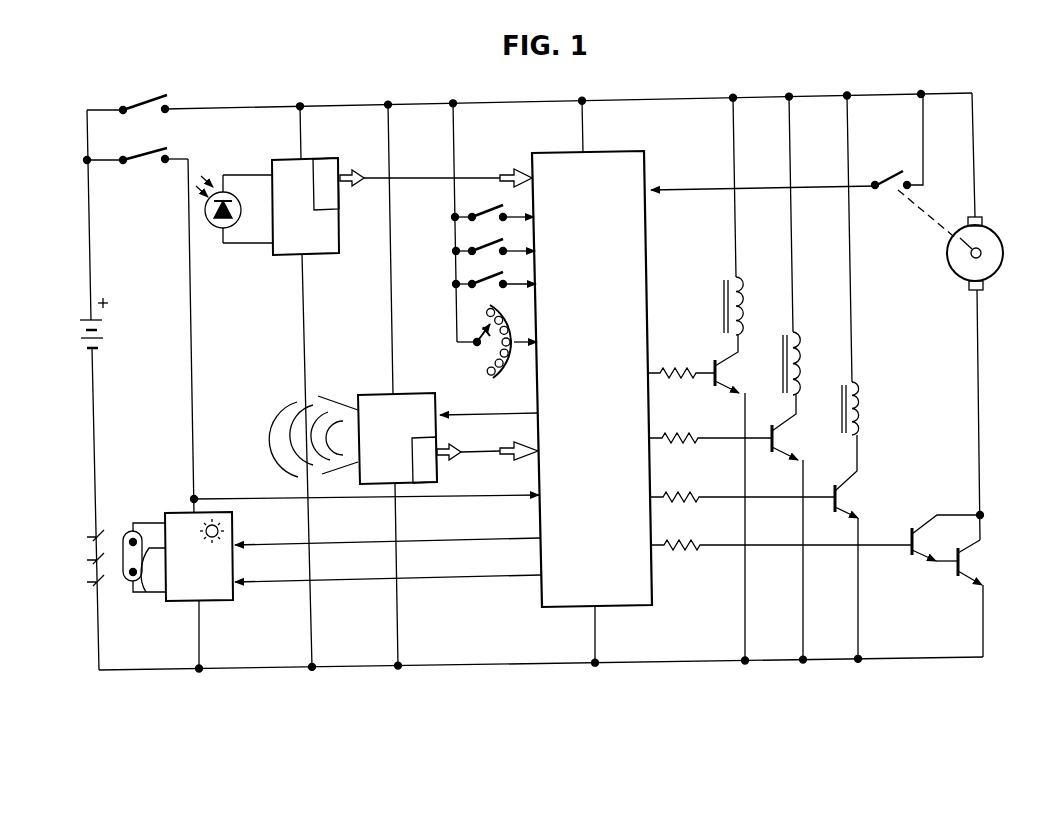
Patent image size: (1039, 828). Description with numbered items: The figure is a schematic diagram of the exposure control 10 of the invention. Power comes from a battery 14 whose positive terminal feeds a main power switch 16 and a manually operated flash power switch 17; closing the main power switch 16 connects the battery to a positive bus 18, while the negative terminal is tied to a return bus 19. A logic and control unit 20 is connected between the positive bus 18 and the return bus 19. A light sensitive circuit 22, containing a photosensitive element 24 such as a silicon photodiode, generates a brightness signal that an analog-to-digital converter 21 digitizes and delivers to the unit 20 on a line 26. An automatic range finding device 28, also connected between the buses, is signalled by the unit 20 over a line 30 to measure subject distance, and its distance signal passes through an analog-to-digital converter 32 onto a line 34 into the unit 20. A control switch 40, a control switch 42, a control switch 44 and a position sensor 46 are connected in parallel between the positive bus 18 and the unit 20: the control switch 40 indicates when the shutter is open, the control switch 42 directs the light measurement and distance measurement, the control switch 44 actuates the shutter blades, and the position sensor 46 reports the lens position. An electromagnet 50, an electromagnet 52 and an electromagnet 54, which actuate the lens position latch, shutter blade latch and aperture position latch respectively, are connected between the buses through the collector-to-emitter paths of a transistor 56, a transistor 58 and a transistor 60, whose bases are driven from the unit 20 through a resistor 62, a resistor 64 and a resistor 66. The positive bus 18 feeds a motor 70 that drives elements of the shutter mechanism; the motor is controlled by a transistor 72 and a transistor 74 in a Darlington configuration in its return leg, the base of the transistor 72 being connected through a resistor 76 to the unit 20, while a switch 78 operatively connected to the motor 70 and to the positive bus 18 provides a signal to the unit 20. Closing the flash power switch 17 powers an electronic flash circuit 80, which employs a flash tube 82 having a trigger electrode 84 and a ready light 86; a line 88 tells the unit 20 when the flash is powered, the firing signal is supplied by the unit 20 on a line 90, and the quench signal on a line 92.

The exposure control 10 is at (889, 46).
The battery 14 is at (108, 329).
The main power switch 16 is at (147, 98).
The flash power switch 17 is at (146, 165).
The positive bus 18 is at (356, 101).
The return bus 19 is at (347, 665).
The logic and control unit 20 is at (620, 151).
The analog-to-digital converter 21 is at (338, 158).
The light sensitive circuit 22 is at (287, 158).
The photosensitive element 24 is at (220, 234).
The line 26 is at (414, 176).
The automatic range finding device 28 is at (413, 394).
The line 30 is at (493, 413).
The analog-to-digital converter 32 is at (437, 472).
The line 34 is at (488, 451).
The control switch 40 is at (487, 211).
The control switch 42 is at (487, 247).
The control switch 44 is at (487, 280).
The position sensor 46 is at (478, 346).
The electromagnet 50 is at (750, 309).
The electromagnet 52 is at (807, 357).
The electromagnet 54 is at (870, 410).
The transistor 56 is at (730, 377).
The transistor 58 is at (786, 447).
The transistor 60 is at (847, 498).
The resistor 62 is at (680, 367).
The resistor 64 is at (686, 437).
The resistor 66 is at (686, 493).
The motor 70 is at (990, 233).
The transistor 72 is at (934, 529).
The transistor 74 is at (979, 566).
The resistor 76 is at (692, 543).
The switch 78 is at (891, 179).
The electronic flash circuit 80 is at (175, 512).
The flash tube 82 is at (127, 532).
The trigger electrode 84 is at (145, 593).
The ready light 86 is at (227, 527).
The line 88 is at (250, 499).
The line 90 is at (458, 540).
The line 92 is at (463, 578).